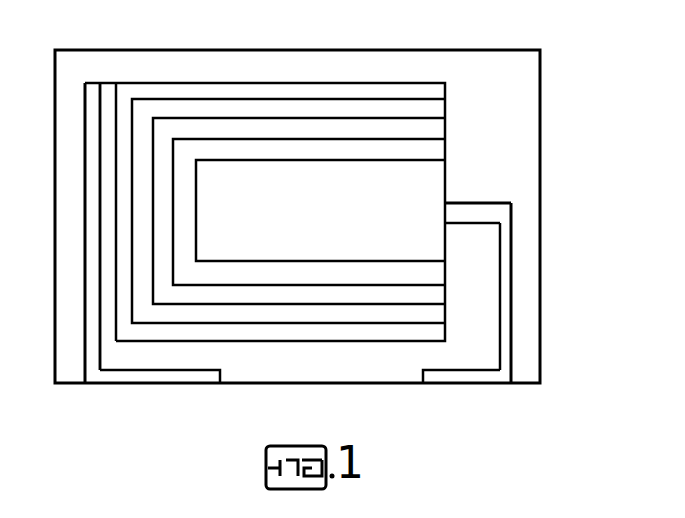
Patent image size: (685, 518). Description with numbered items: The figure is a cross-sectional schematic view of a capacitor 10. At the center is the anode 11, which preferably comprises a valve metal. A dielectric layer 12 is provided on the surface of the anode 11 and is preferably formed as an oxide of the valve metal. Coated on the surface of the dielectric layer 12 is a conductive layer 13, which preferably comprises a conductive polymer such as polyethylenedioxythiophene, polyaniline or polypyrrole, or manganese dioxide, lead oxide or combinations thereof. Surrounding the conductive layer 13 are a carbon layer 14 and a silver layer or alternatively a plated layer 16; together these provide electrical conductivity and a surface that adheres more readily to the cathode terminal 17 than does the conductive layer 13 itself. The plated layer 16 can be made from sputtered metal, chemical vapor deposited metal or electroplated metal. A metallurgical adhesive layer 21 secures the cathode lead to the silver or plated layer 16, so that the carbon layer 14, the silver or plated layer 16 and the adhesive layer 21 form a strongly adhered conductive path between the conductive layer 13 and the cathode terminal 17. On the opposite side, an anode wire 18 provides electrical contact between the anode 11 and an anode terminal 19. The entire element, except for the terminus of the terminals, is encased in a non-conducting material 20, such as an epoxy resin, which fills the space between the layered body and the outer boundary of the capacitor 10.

The capacitor 10 is at (562, 120).
The anode 11 is at (329, 220).
The dielectric layer 12 is at (446, 150).
The conductive layer 13 is at (446, 130).
The carbon layer 14 is at (446, 104).
The silver layer or plated layer 16 is at (446, 89).
The cathode terminal 17 is at (90, 259).
The anode wire 18 is at (493, 213).
The anode terminal 19 is at (512, 262).
The non-conducting material 20 is at (145, 62).
The metallurgical adhesive layer 21 is at (108, 185).